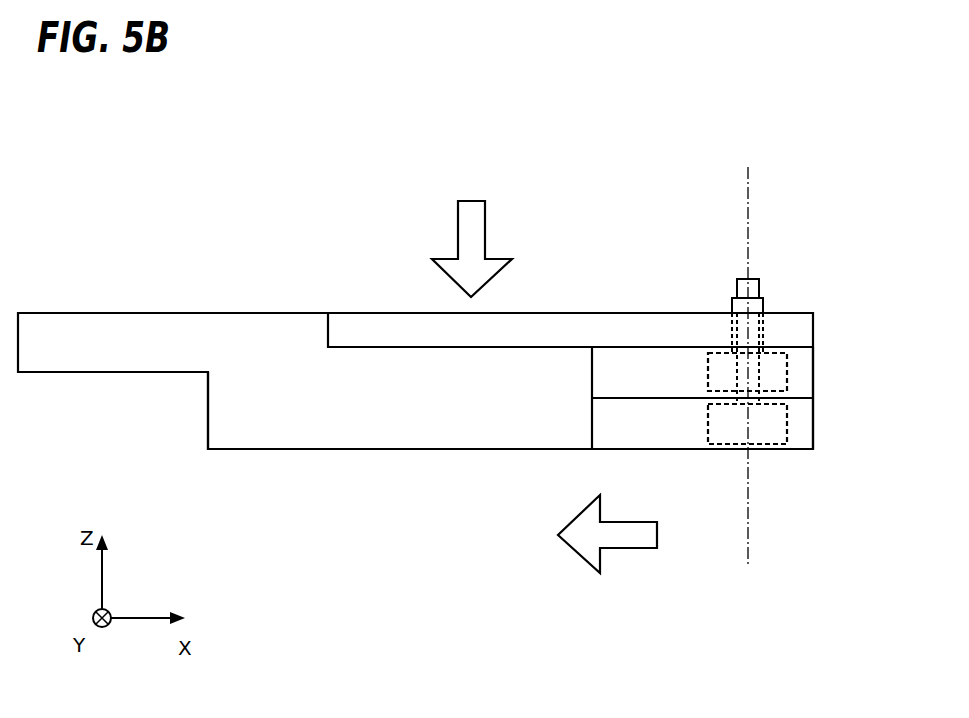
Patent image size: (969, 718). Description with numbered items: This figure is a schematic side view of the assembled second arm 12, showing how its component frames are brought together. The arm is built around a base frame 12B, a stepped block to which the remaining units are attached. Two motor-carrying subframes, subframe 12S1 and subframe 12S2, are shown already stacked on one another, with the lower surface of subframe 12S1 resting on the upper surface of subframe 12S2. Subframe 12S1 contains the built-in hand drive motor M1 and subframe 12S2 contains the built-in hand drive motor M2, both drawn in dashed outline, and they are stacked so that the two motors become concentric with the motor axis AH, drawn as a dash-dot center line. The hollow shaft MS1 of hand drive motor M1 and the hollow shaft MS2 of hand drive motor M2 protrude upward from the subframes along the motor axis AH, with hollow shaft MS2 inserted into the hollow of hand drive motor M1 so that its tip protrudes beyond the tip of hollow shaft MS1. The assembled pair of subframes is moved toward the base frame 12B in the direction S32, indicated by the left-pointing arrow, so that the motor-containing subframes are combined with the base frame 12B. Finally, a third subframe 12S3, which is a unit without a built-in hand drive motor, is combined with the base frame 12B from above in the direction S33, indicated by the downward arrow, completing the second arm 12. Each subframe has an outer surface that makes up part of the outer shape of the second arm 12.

The second arm 12 is at (279, 272).
The base frame 12B is at (292, 430).
The subframe 12S1 is at (807, 370).
The subframe 12S2 is at (797, 433).
The subframe 12S3 is at (615, 332).
The hollow shaft MS1 is at (732, 306).
The hollow shaft MS2 is at (740, 279).
The hand drive motor M1 is at (699, 368).
The hand drive motor M2 is at (699, 416).
The motor axis AH is at (748, 215).
The direction S32 is at (635, 550).
The direction S33 is at (487, 212).